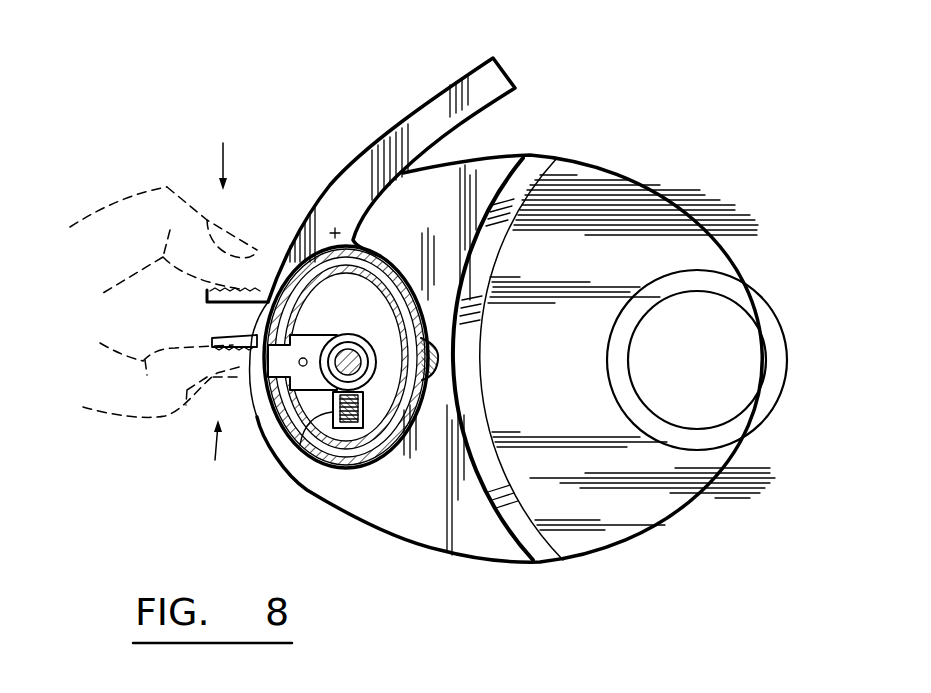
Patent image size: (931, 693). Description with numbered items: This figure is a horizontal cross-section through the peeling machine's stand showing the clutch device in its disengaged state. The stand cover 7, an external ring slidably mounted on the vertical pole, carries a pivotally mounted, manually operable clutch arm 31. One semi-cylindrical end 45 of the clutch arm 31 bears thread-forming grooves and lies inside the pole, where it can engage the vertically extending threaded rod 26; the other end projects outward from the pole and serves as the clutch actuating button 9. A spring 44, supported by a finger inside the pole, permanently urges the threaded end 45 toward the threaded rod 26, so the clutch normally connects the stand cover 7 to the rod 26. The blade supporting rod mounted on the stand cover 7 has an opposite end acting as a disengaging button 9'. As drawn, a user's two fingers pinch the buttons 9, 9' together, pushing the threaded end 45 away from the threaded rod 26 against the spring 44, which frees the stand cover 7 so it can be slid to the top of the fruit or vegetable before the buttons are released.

The stand cover 7 is at (323, 466).
The clutch actuating button 9 is at (228, 413).
The disengaging button 9' is at (240, 215).
The threaded rod 26 is at (350, 347).
The clutch arm 31 is at (242, 360).
The spring 44 is at (315, 418).
The semi-cylindrical end 45 is at (362, 432).